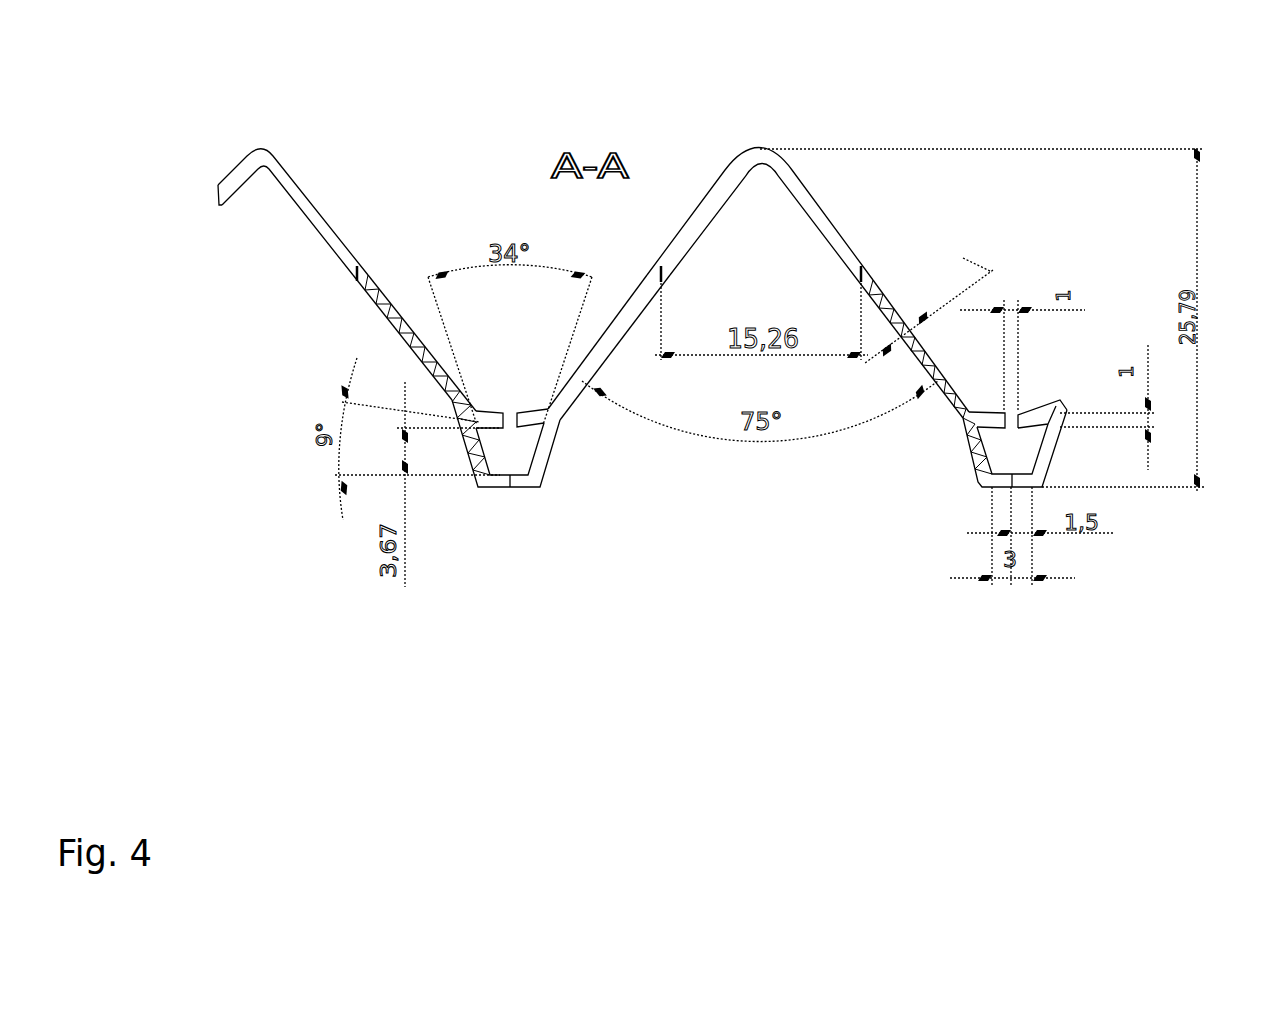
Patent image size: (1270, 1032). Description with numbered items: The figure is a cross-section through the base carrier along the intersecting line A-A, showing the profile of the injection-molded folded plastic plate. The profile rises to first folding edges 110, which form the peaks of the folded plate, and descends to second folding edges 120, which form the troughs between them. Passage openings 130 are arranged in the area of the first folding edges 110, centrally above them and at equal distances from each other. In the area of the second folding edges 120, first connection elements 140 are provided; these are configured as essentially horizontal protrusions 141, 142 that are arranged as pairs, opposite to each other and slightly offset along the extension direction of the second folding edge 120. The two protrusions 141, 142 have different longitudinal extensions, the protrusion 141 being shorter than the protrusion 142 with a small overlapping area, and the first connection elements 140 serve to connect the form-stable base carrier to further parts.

The first folding edge 110 is at (259, 140).
The second folding edge 120 is at (510, 500).
The passage opening 130 is at (823, 226).
The first connection element 140 is at (1022, 388).
The horizontal protrusion 141 is at (485, 420).
The horizontal protrusion 142 is at (527, 418).